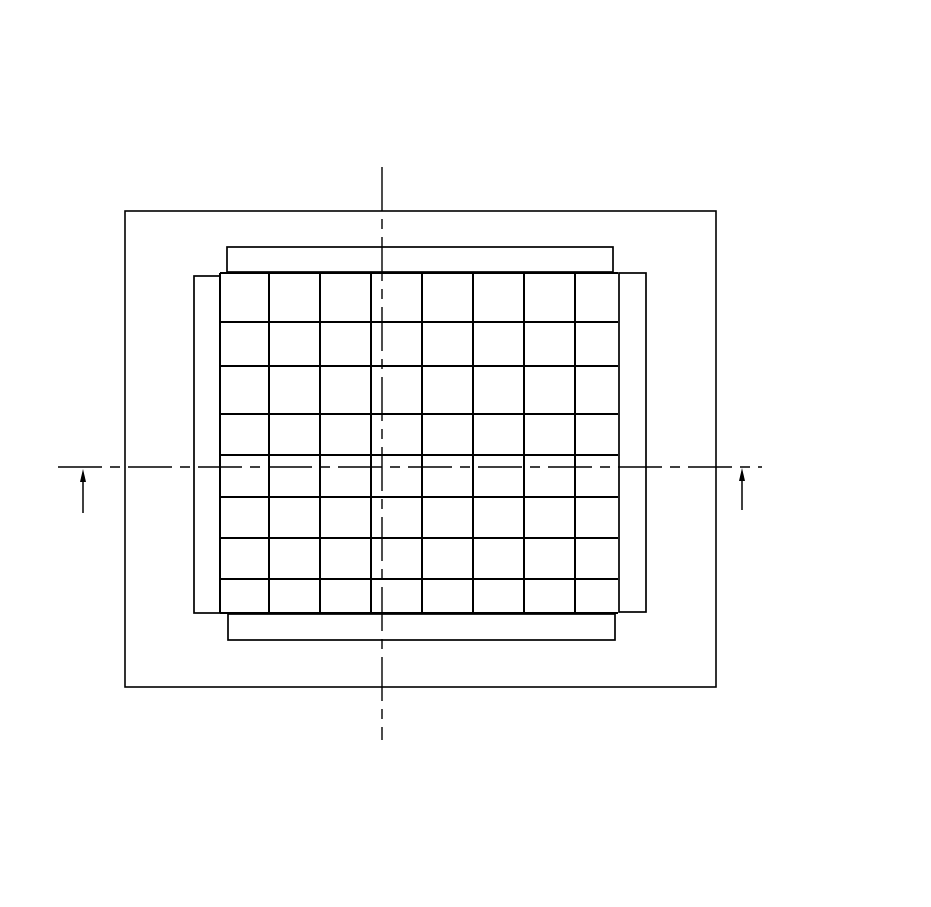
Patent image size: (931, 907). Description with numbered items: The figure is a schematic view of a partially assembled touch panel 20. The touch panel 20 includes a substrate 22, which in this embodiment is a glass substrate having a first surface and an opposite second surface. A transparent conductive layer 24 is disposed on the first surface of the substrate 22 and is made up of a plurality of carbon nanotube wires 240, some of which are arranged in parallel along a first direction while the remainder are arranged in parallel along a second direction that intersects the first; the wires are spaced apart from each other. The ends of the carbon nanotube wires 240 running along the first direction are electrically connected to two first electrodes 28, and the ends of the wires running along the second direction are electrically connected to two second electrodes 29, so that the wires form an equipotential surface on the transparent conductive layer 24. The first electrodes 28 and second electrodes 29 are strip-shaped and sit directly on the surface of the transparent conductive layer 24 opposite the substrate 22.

The touch panel 20 is at (422, 41).
The substrate 22 is at (186, 232).
The transparent conductive layer 24 is at (595, 590).
The carbon nanotube wires 240 is at (622, 579).
The first electrodes 28 is at (202, 517).
The second electrodes 29 is at (511, 260).